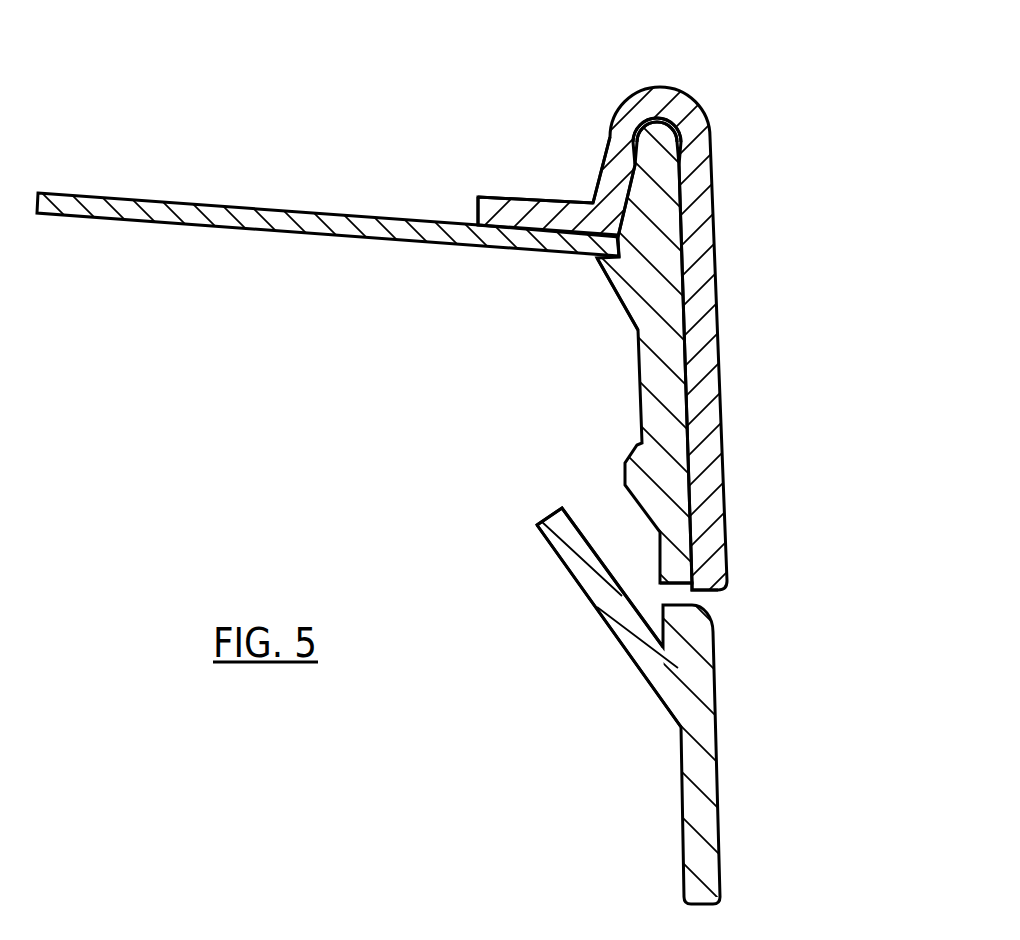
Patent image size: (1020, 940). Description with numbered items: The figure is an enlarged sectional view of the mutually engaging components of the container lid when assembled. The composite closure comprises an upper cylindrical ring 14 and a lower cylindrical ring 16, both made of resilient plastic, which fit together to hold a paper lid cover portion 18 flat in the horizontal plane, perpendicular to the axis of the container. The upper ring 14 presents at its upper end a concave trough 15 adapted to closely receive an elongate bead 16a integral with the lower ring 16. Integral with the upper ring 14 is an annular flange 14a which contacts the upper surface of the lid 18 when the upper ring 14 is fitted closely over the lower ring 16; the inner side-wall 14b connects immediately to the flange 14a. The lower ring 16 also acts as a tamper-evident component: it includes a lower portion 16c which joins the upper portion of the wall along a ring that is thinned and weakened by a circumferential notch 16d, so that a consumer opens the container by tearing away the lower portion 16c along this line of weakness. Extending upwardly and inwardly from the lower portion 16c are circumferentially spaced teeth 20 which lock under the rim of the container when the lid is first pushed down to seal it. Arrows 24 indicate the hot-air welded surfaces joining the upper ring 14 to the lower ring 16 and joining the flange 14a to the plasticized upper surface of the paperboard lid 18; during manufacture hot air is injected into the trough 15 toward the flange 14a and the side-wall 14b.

The upper cylindrical ring 14 is at (697, 104).
The annular flange 14a is at (542, 202).
The inner side-wall 14b is at (623, 178).
The concave trough 15 is at (664, 119).
The lower cylindrical ring 16 is at (640, 368).
The elongate bead 16a is at (668, 170).
The lower portion 16c is at (597, 263).
The circumferential notch 16d is at (714, 600).
The paper lid cover portion 18 is at (231, 252).
The teeth 20 is at (566, 591).
The arrows 24 is at (516, 196).